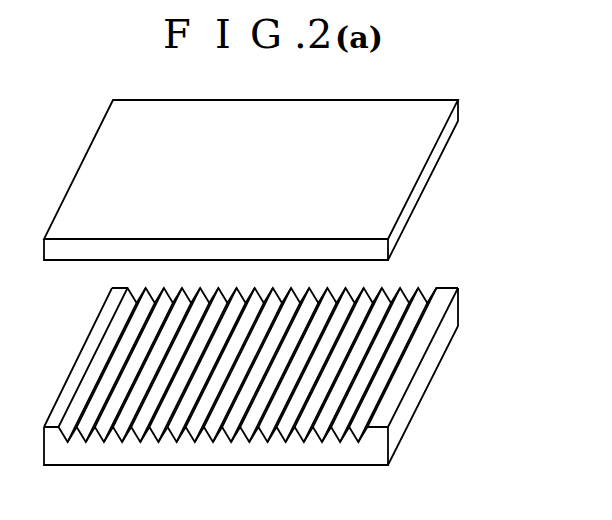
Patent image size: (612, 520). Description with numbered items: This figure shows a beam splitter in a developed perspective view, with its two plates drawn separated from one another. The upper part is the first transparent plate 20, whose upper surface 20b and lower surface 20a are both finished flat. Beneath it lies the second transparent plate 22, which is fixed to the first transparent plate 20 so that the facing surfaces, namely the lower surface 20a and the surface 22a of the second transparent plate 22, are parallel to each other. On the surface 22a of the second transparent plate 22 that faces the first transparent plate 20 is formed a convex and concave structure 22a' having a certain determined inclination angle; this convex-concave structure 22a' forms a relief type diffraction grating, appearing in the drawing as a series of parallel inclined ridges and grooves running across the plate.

The first transparent plate 20 is at (440, 90).
The lower surface of the first transparent plate 20a is at (372, 266).
The upper surface of the first transparent plate 20b is at (317, 117).
The second transparent plate 22 is at (420, 398).
The surface of the second transparent plate 22a is at (294, 357).
The convex and concave structure 22a' is at (248, 408).